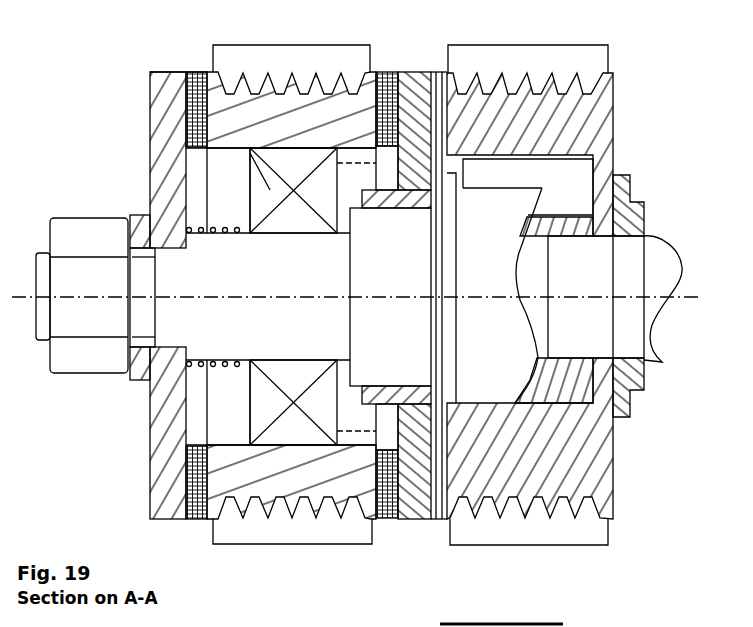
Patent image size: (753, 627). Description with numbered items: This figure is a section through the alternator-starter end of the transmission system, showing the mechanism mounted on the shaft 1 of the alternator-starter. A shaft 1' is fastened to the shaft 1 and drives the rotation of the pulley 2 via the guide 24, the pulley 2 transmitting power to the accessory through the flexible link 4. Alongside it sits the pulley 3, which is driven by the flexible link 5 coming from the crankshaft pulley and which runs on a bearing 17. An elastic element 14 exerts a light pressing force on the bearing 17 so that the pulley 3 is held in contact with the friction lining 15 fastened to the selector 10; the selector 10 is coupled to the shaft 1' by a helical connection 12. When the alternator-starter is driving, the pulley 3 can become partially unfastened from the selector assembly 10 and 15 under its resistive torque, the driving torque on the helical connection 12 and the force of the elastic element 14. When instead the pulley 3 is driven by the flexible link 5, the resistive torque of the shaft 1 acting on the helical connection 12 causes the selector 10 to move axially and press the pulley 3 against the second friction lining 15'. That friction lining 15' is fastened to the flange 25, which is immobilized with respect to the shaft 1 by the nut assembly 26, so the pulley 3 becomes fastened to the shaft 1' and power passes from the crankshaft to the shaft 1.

The shaft 1 is at (613, 310).
The shaft 1' is at (593, 305).
The pulley 2 is at (507, 275).
The pulley 3 is at (291, 89).
The flexible link 4 is at (530, 460).
The flexible link 5 is at (291, 504).
The selector 10 is at (292, 237).
The helical connection 12 is at (353, 319).
The elastic element 14 is at (217, 259).
The friction lining 15 is at (435, 485).
The friction lining 15' is at (165, 506).
The bearing 17 is at (169, 295).
The guide 24 is at (571, 174).
The flange 25 is at (145, 51).
The nut assembly 26 is at (87, 259).